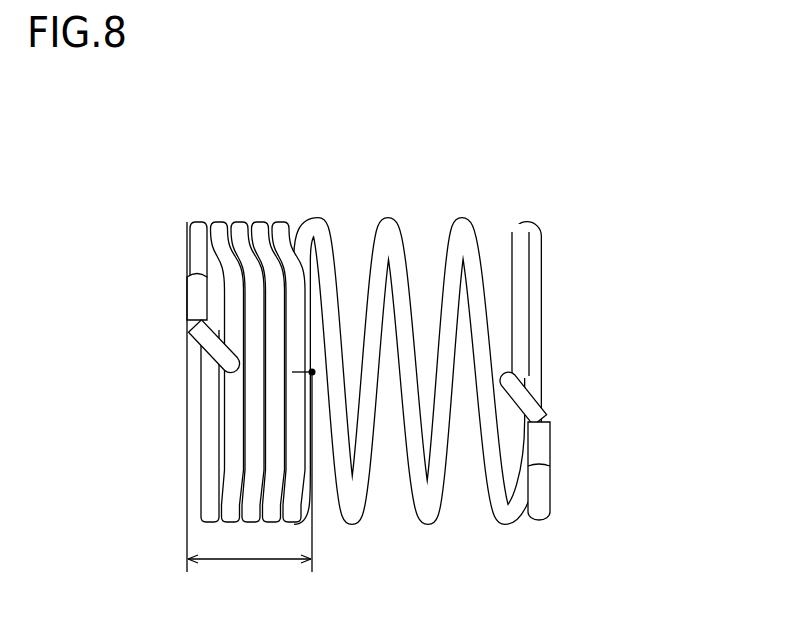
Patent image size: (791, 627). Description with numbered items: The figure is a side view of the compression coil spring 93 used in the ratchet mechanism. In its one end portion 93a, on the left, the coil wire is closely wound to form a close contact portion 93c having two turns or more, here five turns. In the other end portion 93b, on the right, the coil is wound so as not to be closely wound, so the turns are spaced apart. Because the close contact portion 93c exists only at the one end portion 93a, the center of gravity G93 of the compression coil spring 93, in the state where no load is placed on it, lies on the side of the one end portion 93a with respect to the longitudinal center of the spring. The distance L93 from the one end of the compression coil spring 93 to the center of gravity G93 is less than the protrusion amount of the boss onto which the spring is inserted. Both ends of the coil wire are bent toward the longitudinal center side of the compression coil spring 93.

The compression coil spring 93 is at (608, 135).
The one end portion 93a is at (277, 183).
The other end portion 93b is at (495, 183).
The close contact portion 93c is at (292, 219).
The center of gravity G93 is at (312, 375).
The distance from the one end to the center of gravity L93 is at (249, 409).